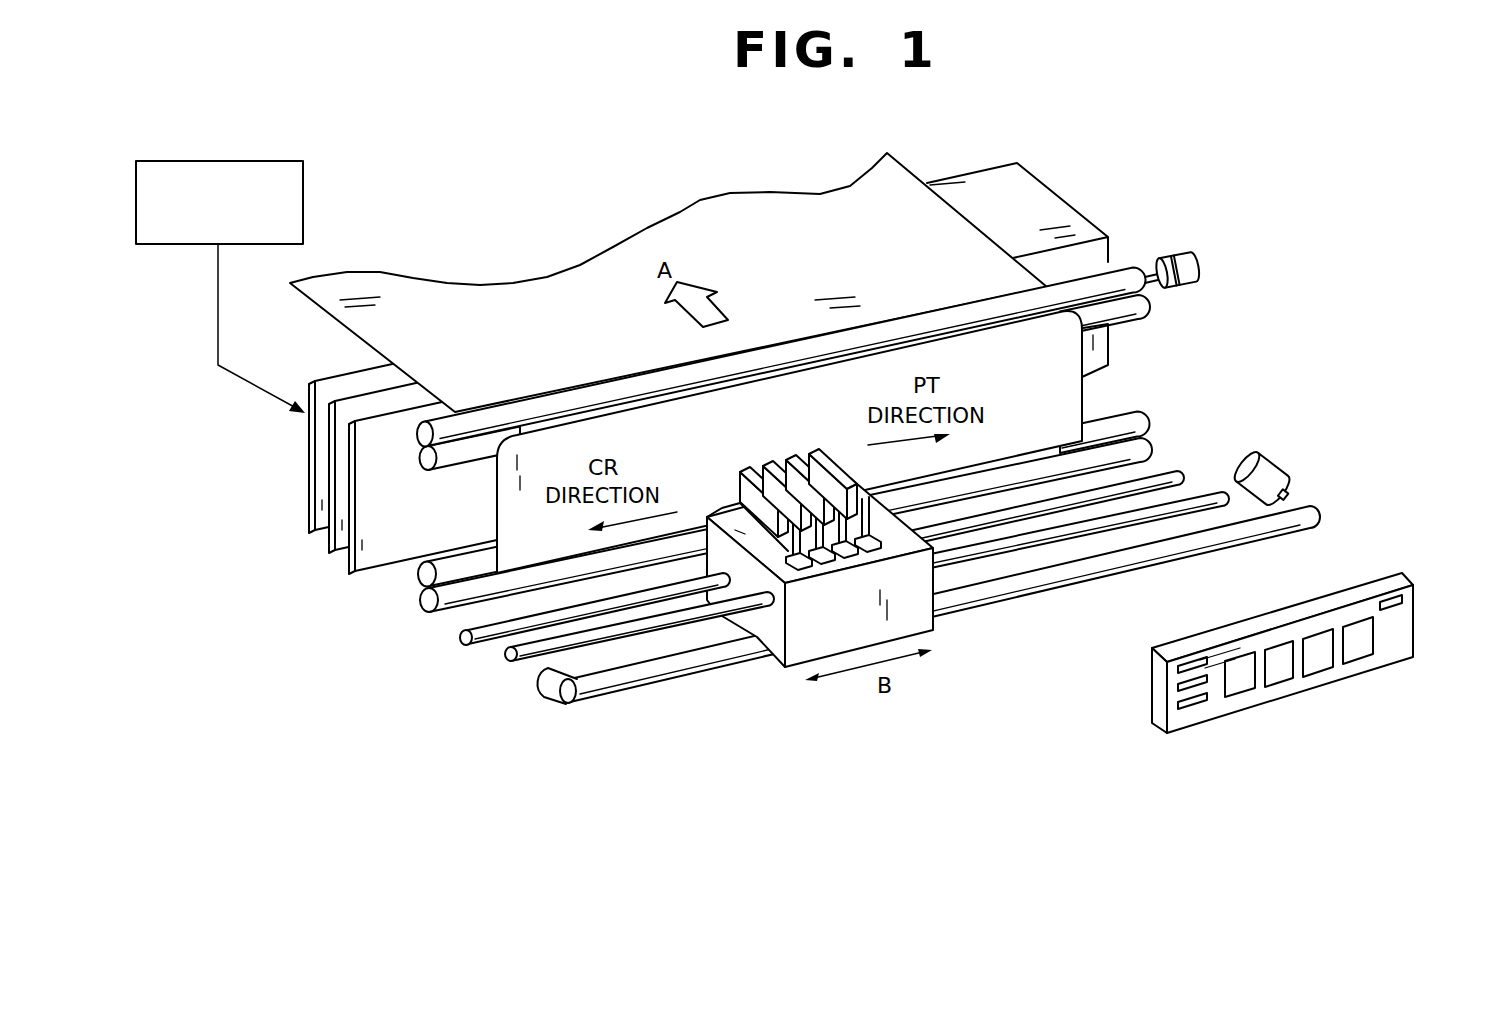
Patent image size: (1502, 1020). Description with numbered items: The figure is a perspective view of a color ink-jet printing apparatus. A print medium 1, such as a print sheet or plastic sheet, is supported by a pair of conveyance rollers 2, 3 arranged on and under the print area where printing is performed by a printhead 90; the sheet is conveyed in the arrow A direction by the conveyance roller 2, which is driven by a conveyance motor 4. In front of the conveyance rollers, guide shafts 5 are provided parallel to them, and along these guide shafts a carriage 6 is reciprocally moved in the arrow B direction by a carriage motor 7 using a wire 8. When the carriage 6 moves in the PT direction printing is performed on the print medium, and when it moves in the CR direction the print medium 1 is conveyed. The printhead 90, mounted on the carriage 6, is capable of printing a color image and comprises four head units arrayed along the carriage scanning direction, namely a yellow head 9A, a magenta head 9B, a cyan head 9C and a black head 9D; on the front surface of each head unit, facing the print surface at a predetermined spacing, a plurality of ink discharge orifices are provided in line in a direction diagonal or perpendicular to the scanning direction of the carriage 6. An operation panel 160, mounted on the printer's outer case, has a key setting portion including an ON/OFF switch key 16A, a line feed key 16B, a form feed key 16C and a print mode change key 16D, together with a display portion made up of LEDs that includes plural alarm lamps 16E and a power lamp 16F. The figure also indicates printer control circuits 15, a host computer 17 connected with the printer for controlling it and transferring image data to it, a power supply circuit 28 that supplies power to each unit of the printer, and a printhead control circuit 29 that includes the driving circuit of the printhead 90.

The print medium 1 is at (728, 212).
The conveyance roller 2 is at (419, 458).
The conveyance roller 3 is at (420, 605).
The conveyance motor 4 is at (1178, 255).
The guide shafts 5 is at (1192, 506).
The carriage 6 is at (805, 648).
The carriage motor 7 is at (1270, 455).
The wire 8 is at (1229, 543).
The yellow head 9A is at (836, 479).
The magenta head 9B is at (788, 461).
The cyan head 9C is at (765, 469).
The black head 9D is at (740, 477).
The printhead 90 is at (767, 474).
The printer control circuits 15 is at (366, 585).
The ON/OFF switch key 16A is at (1365, 643).
The line feed key 16B is at (1323, 655).
The form feed key 16C is at (1285, 672).
The print mode change key 16D is at (1243, 683).
The alarm lamps 16E is at (1172, 693).
The power lamp 16F is at (1390, 598).
The host computer 17 is at (233, 161).
The power supply circuit 28 is at (1055, 200).
The printhead control circuit 29 is at (885, 552).
The operation panel 160 is at (1289, 648).